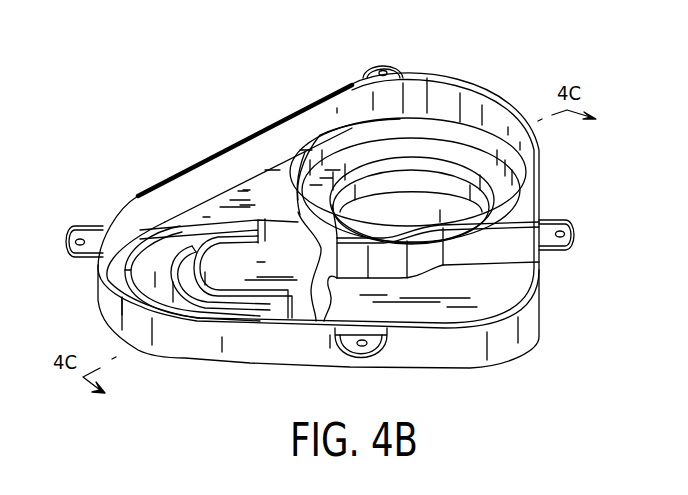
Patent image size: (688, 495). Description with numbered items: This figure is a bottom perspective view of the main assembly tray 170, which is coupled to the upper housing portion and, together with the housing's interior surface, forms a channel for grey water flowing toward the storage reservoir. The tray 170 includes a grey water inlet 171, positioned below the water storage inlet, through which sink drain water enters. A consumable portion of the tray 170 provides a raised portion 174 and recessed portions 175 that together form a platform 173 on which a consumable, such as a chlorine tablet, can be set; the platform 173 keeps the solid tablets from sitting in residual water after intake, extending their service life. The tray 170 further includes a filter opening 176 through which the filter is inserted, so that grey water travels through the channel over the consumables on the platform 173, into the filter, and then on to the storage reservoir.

The main assembly tray 170 is at (540, 195).
The grey water inlet 171 is at (407, 312).
The platform 173 is at (207, 252).
The raised portion 174 is at (117, 295).
The recessed portions 175 is at (143, 275).
The filter opening 176 is at (375, 168).